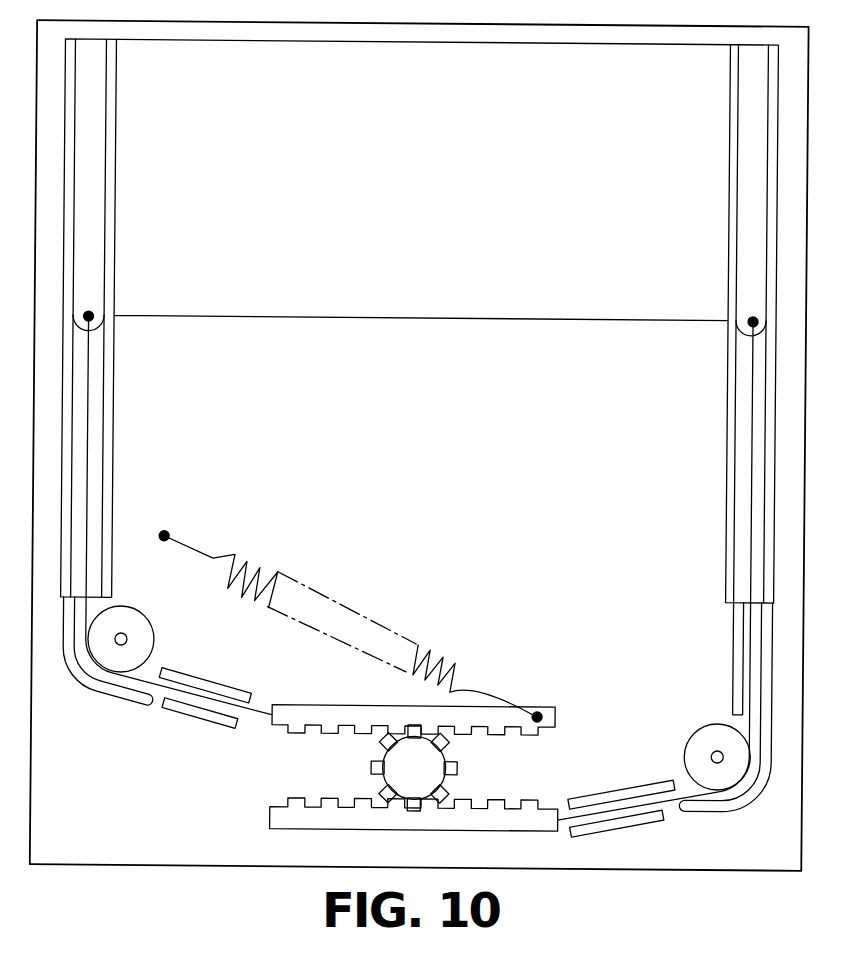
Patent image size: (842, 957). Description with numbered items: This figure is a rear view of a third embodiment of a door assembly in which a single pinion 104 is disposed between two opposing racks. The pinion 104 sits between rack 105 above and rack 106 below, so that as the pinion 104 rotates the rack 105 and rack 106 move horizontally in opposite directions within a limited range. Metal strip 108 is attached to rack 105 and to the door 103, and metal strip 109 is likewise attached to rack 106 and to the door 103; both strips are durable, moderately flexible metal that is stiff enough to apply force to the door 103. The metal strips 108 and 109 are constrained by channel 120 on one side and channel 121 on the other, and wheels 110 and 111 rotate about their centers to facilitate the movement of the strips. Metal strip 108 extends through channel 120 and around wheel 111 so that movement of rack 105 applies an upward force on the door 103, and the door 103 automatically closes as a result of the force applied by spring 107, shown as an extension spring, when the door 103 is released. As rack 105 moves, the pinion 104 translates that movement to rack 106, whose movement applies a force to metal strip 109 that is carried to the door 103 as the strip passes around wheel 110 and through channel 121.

The door 103 is at (474, 147).
The pinion 104 is at (461, 769).
The rack 105 is at (559, 716).
The rack 106 is at (272, 820).
The spring 107 is at (263, 571).
The metal strip 108 is at (199, 709).
The metal strip 109 is at (650, 801).
The wheel 110 is at (717, 721).
The wheel 111 is at (156, 641).
The channel 120 is at (97, 507).
The channel 121 is at (760, 644).